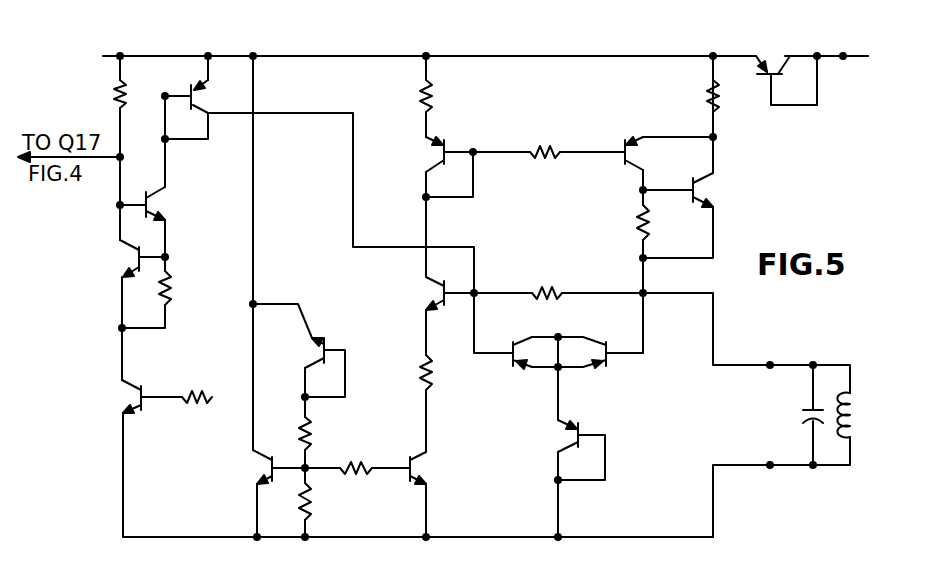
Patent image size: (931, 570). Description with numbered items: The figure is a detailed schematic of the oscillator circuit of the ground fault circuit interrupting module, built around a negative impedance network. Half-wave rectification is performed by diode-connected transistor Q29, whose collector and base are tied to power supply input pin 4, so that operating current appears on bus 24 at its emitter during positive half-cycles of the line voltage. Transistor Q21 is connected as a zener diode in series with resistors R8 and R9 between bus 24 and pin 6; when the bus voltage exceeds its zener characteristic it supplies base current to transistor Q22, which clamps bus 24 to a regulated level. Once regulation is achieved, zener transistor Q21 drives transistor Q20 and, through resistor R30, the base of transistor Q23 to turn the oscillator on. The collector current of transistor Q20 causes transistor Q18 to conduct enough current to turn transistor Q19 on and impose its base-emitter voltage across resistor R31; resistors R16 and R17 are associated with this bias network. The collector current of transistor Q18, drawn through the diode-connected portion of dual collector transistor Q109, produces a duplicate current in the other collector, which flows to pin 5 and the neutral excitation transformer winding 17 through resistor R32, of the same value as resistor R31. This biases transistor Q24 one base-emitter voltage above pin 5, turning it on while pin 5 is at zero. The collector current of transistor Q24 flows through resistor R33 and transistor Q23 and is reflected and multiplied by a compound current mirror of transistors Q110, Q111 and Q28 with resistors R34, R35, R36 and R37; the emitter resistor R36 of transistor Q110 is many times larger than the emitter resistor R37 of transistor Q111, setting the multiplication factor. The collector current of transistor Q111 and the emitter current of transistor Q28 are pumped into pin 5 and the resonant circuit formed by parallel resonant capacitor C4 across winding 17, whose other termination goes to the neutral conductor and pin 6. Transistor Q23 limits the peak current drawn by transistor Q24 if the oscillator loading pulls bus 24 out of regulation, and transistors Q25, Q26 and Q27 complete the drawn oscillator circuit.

The bus 24 is at (500, 56).
The power supply input pin 4 is at (851, 43).
The pin 5 is at (770, 351).
The pin 6 is at (560, 550).
The neutral excitation transformer winding 17 is at (857, 404).
The parallel resonant capacitor C4 is at (800, 420).
The resistor R16 is at (118, 92).
The resistor R17 is at (197, 390).
The resistor R31 is at (176, 287).
The resistor R8 is at (318, 428).
The resistor R9 is at (318, 506).
The resistor R30 is at (363, 457).
The resistor R32 is at (546, 284).
The resistor R33 is at (416, 370).
The resistor R34 is at (550, 140).
The resistor R35 is at (636, 222).
The emitter resistor R36 is at (436, 97).
The emitter resistor R37 is at (705, 92).
The transistor Q18 is at (166, 201).
The transistor Q19 is at (125, 257).
The transistor Q20 is at (125, 395).
The zener transistor Q21 is at (313, 333).
The transistor Q22 is at (263, 465).
The transistor Q23 is at (429, 464).
The transistor Q24 is at (425, 291).
The transistor Q25 is at (531, 372).
The transistor Q26 is at (598, 368).
The transistor Q27 is at (564, 438).
The transistor Q28 is at (714, 188).
The diode-connected transistor Q29 is at (768, 54).
The dual collector transistor Q109 is at (202, 82).
The transistor Q110 is at (424, 157).
The transistor Q111 is at (632, 140).